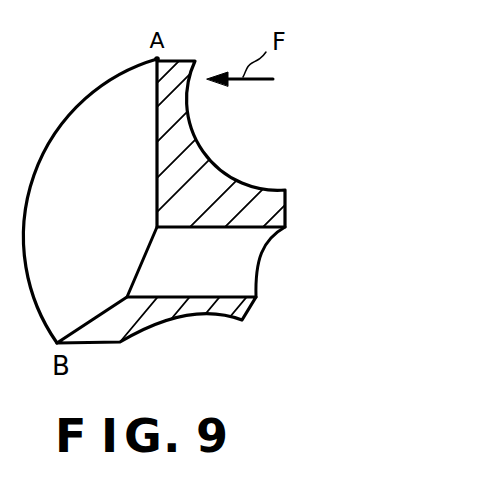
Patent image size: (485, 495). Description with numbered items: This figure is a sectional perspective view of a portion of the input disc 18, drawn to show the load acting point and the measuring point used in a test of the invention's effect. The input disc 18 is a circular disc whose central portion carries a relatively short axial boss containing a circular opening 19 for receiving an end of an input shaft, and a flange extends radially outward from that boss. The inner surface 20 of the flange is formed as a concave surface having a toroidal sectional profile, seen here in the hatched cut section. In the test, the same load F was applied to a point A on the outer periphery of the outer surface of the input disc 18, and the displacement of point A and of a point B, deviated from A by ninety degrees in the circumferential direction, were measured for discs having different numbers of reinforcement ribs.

The input disc 18 is at (73, 117).
The circular opening 19 is at (218, 277).
The inner surface 20 is at (210, 152).